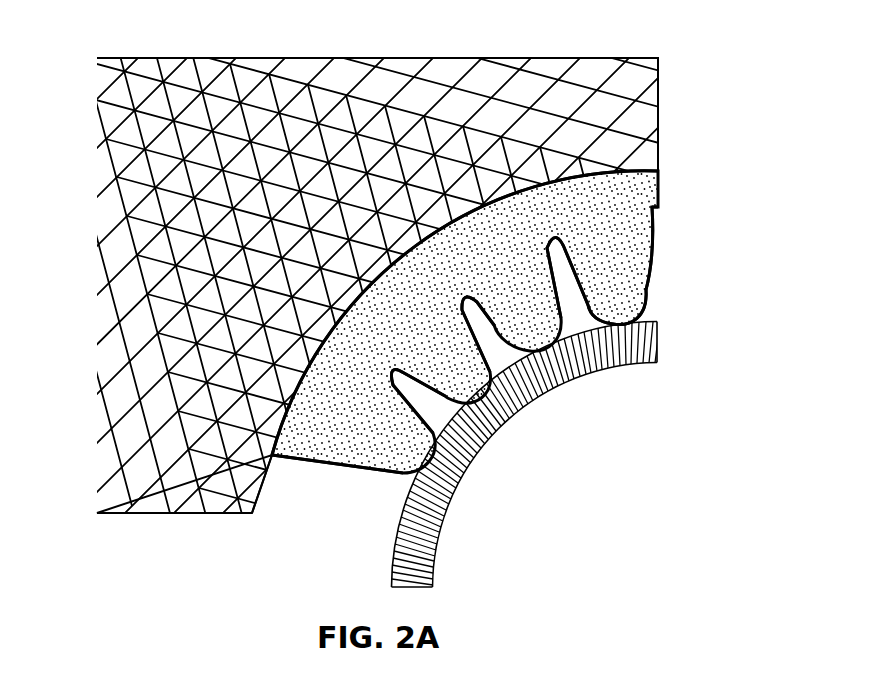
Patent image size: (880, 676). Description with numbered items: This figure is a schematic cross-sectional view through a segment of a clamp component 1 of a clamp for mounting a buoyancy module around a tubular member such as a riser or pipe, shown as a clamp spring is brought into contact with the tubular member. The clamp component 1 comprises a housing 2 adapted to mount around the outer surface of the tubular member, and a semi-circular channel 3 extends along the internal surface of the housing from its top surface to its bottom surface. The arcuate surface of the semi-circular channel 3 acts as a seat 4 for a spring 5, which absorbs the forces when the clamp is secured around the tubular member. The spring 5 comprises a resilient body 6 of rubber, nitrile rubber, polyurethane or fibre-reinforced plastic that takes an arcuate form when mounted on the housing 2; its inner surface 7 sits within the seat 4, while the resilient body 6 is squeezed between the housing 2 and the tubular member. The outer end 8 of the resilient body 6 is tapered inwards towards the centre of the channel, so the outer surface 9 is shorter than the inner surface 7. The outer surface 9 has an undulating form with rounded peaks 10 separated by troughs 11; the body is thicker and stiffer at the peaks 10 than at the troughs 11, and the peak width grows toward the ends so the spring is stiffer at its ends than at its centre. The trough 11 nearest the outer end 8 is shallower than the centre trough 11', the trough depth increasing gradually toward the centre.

The clamp component 1 is at (58, 128).
The housing 2 is at (643, 118).
The semi-circular channel 3 is at (660, 153).
The seat 4 is at (262, 486).
The spring 5 is at (377, 470).
The resilient body 6 is at (661, 198).
The inner surface 7 is at (523, 145).
The outer end 8 is at (330, 467).
The outer surface 9 is at (652, 287).
The rounded peak 10 is at (575, 380).
The trough 11 is at (546, 455).
The centre trough 11' is at (705, 248).